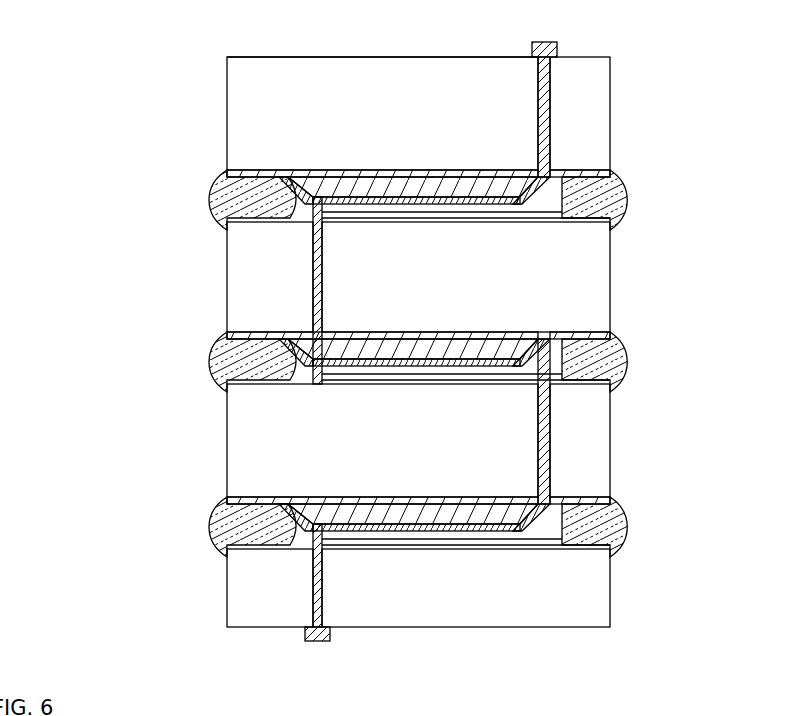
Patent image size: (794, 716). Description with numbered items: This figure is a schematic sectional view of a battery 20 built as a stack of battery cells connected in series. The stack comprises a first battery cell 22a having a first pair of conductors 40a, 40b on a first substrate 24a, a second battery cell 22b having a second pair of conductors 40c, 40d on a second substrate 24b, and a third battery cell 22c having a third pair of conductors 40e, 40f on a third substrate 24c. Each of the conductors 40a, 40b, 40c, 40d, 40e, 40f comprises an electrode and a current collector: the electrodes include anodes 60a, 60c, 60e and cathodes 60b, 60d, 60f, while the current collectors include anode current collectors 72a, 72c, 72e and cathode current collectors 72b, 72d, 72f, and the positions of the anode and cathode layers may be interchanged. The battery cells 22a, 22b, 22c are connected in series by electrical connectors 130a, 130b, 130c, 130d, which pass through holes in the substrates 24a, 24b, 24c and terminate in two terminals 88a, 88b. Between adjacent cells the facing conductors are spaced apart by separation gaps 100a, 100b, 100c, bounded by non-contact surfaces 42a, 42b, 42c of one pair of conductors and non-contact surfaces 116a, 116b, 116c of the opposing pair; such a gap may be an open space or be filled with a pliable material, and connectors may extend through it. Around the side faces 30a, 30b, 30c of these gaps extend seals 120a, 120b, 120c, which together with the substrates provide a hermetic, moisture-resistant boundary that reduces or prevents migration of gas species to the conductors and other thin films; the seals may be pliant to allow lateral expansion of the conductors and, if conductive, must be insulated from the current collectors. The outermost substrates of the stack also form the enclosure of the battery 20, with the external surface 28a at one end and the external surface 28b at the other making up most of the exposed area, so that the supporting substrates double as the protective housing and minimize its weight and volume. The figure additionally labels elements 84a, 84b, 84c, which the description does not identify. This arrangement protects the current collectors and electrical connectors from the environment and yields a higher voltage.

The battery 20 is at (95, 50).
The external surface 28a is at (265, 57).
The external surface 28b is at (395, 627).
The terminal 88a is at (565, 38).
The terminal 88b is at (303, 641).
The first substrate 24a is at (443, 86).
The second substrate 24b is at (441, 287).
The third substrate 24c is at (441, 450).
The electrical connector 130a is at (548, 87).
The electrical connector 130b is at (313, 248).
The electrical connector 130c is at (550, 437).
The electrical connector 130d is at (313, 570).
The conductor 40a is at (545, 178).
The conductor 40b is at (322, 186).
The conductor 40c is at (545, 340).
The conductor 40d is at (322, 348).
The conductor 40e is at (545, 505).
The conductor 40f is at (322, 513).
The separator 84a is at (360, 197).
The separator 84b is at (356, 359).
The separator 84c is at (352, 524).
The anode current collector 72a is at (575, 178).
The cathode current collector 72b is at (432, 172).
The anode current collector 72c is at (575, 340).
The cathode current collector 72d is at (432, 336).
The anode current collector 72e is at (573, 505).
The cathode current collector 72f is at (408, 500).
The anode 60a is at (522, 219).
The cathode 60b is at (382, 157).
The anode 60c is at (524, 381).
The cathode 60d is at (481, 334).
The anode 60e is at (500, 550).
The cathode 60f is at (460, 499).
The first battery cell 22a is at (486, 185).
The second battery cell 22b is at (486, 361).
The third battery cell 22c is at (485, 528).
The side face 30a is at (166, 190).
The side face 30b is at (166, 370).
The side face 30c is at (166, 530).
The seal 120a is at (628, 202).
The seal 120b is at (628, 364).
The seal 120c is at (628, 525).
The separation gap 100a is at (342, 212).
The separation gap 100b is at (323, 376).
The separation gap 100c is at (344, 541).
The non-contact surface 42a is at (408, 214).
The non-contact surface 42b is at (384, 376).
The non-contact surface 42c is at (408, 541).
The non-contact surface 116a is at (478, 214).
The non-contact surface 116b is at (454, 376).
The non-contact surface 116c is at (468, 541).